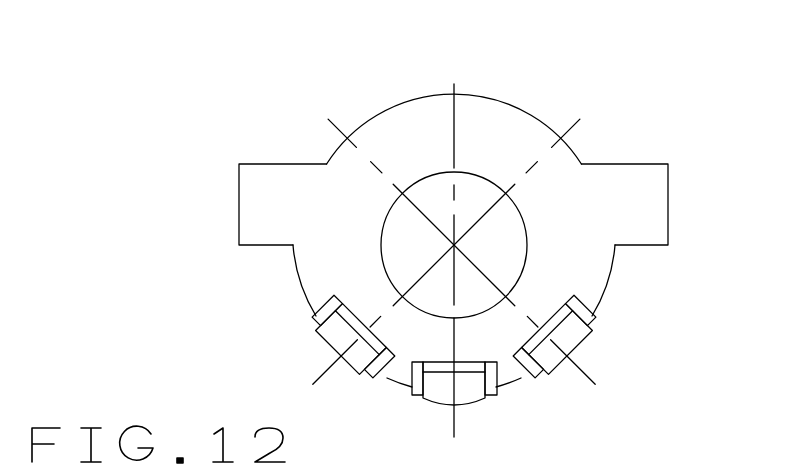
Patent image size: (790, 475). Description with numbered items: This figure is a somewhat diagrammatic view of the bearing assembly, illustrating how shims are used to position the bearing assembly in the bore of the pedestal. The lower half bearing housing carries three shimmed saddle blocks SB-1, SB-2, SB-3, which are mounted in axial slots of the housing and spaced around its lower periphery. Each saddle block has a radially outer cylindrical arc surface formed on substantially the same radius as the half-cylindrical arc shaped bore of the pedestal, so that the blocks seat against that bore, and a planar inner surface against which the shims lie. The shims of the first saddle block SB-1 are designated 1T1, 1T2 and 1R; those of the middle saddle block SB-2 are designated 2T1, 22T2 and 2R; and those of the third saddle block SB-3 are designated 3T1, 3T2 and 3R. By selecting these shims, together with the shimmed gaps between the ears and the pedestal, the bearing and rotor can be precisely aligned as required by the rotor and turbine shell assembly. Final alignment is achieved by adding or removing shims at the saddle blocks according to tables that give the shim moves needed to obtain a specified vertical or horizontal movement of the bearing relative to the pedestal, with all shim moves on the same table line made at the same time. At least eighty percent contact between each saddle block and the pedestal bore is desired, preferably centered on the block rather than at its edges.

The shimmed saddle block SB-1 is at (327, 353).
The shim 1R is at (367, 313).
The shim 1T1 is at (313, 302).
The shim 1T2 is at (397, 348).
The shimmed saddle block SB-2 is at (467, 410).
The shim 2R is at (452, 358).
The shim 2T1 is at (404, 389).
The shim 22T2 is at (506, 389).
The shimmed saddle block SB-3 is at (584, 358).
The shim 3R is at (540, 318).
The shim 3T1 is at (511, 348).
The shim 3T2 is at (589, 306).